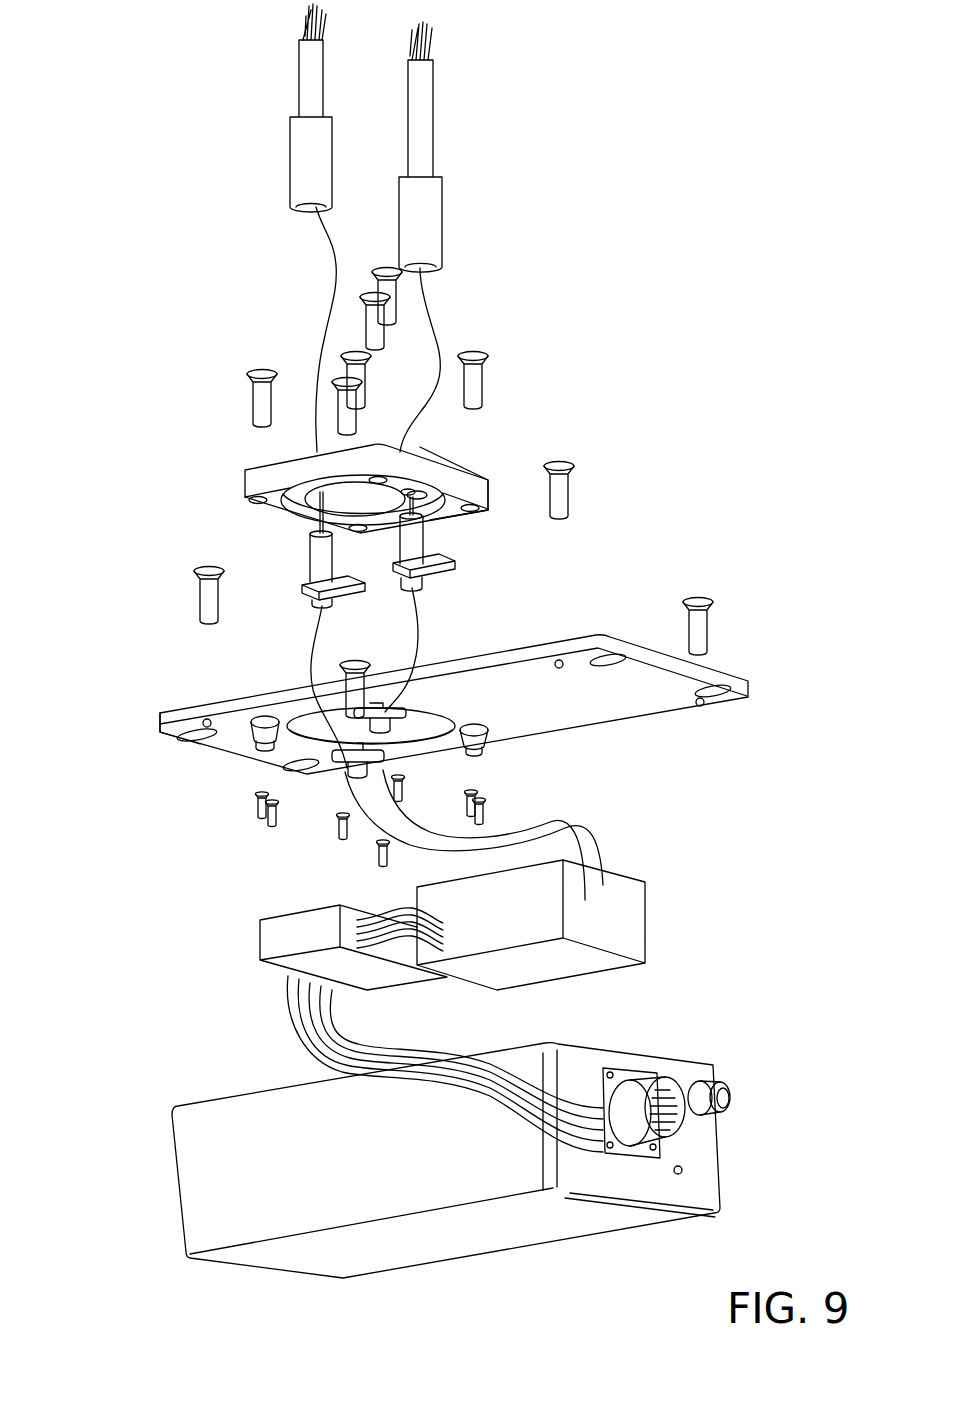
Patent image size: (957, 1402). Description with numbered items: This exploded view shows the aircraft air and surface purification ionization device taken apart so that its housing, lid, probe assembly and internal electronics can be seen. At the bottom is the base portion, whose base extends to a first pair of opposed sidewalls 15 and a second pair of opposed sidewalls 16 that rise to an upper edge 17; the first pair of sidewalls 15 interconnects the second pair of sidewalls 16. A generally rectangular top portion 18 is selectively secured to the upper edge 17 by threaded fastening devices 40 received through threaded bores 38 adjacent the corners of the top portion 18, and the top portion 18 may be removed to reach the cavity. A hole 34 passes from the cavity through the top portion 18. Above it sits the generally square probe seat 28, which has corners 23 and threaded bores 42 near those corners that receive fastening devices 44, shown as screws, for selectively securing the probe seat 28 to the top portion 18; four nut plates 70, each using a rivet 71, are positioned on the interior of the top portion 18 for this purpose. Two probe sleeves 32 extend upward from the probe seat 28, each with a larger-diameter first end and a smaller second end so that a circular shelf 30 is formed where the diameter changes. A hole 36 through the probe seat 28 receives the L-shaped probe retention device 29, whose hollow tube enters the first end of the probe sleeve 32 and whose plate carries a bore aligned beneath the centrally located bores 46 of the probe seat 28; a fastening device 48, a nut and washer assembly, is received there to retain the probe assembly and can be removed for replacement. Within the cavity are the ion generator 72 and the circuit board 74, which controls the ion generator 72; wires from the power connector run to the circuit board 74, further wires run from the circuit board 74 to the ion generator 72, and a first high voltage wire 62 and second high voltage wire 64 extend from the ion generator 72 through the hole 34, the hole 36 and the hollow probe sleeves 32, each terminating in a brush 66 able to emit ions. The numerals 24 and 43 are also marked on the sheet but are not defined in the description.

The first pair of opposed sidewalls 15 is at (230, 1183).
The second pair of opposed sidewalls 16 is at (700, 1142).
The upper edge 17 is at (690, 1058).
The top portion 18 is at (637, 687).
The corners 23 is at (245, 483).
The plate end 24 is at (193, 740).
The probe seat 28 is at (475, 480).
The probe retention device 29 is at (427, 535).
The circular shelf 30 is at (292, 118).
The probe sleeve 32 is at (424, 133).
The hole 34 is at (317, 723).
The hole 36 is at (408, 488).
The threaded bore 38 is at (702, 705).
The fastening device 40 is at (713, 627).
The threaded bores 42 is at (260, 500).
The nuts 43 is at (393, 710).
The fastening device 44 is at (257, 402).
The bores 46 is at (413, 487).
The fastening device 48 is at (380, 343).
The first high voltage wire 62 is at (316, 243).
The second high voltage wire 64 is at (432, 315).
The brush 66 is at (432, 40).
The nut plate 70 is at (250, 740).
The rivet 71 is at (250, 803).
The ion generator 72 is at (632, 905).
The circuit board 74 is at (272, 937).